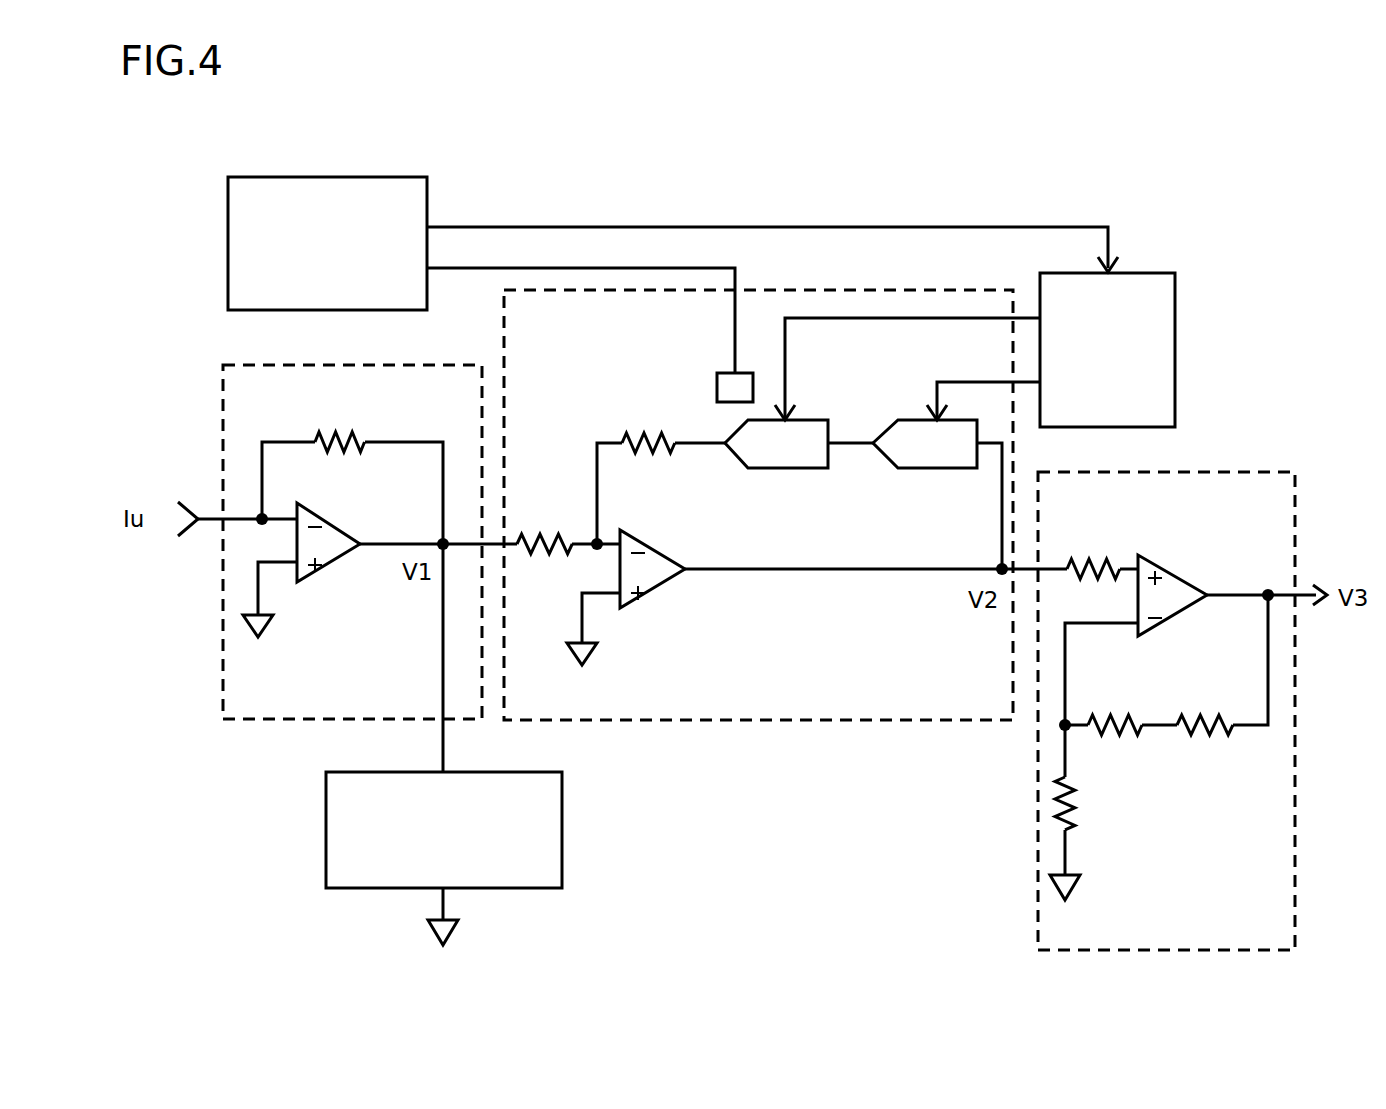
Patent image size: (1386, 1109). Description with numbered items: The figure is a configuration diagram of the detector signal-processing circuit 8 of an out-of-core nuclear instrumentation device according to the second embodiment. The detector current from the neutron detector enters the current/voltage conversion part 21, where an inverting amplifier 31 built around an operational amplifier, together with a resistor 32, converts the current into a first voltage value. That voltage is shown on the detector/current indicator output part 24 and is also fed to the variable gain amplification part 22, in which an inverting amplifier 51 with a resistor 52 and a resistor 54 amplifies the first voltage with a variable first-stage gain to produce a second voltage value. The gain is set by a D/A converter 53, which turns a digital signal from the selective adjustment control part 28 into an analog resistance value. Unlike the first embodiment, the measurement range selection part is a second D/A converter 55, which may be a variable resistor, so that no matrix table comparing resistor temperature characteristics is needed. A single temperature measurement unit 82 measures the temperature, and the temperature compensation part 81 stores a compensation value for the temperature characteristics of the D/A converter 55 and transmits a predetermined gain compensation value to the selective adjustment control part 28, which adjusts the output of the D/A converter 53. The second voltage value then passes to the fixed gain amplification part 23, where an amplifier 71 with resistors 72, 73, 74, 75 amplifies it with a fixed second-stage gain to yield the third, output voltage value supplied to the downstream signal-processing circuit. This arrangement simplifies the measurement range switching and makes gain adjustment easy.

The detector signal-processing circuit 8 is at (1150, 170).
The temperature compensation part 81 is at (228, 243).
The temperature measurement unit 82 is at (717, 375).
The selective adjustment control part 28 is at (1175, 355).
The current/voltage conversion part 21 is at (253, 722).
The inverting amplifier 31 is at (335, 565).
The resistor 32 is at (345, 427).
The detector/current indicator output part 24 is at (562, 835).
The variable gain amplification part 22 is at (790, 724).
The inverting amplifier 51 is at (665, 585).
The resistor 52 is at (548, 555).
The D/A converter 53 is at (935, 483).
The resistor 54 is at (645, 443).
The D/A converter 55 is at (780, 483).
The fixed gain amplification part 23 is at (1038, 858).
The amplifier 71 is at (1175, 570).
The resistor 72 is at (1087, 556).
The resistor 73 is at (1115, 740).
The resistor 74 is at (1210, 740).
The resistor 75 is at (1078, 805).